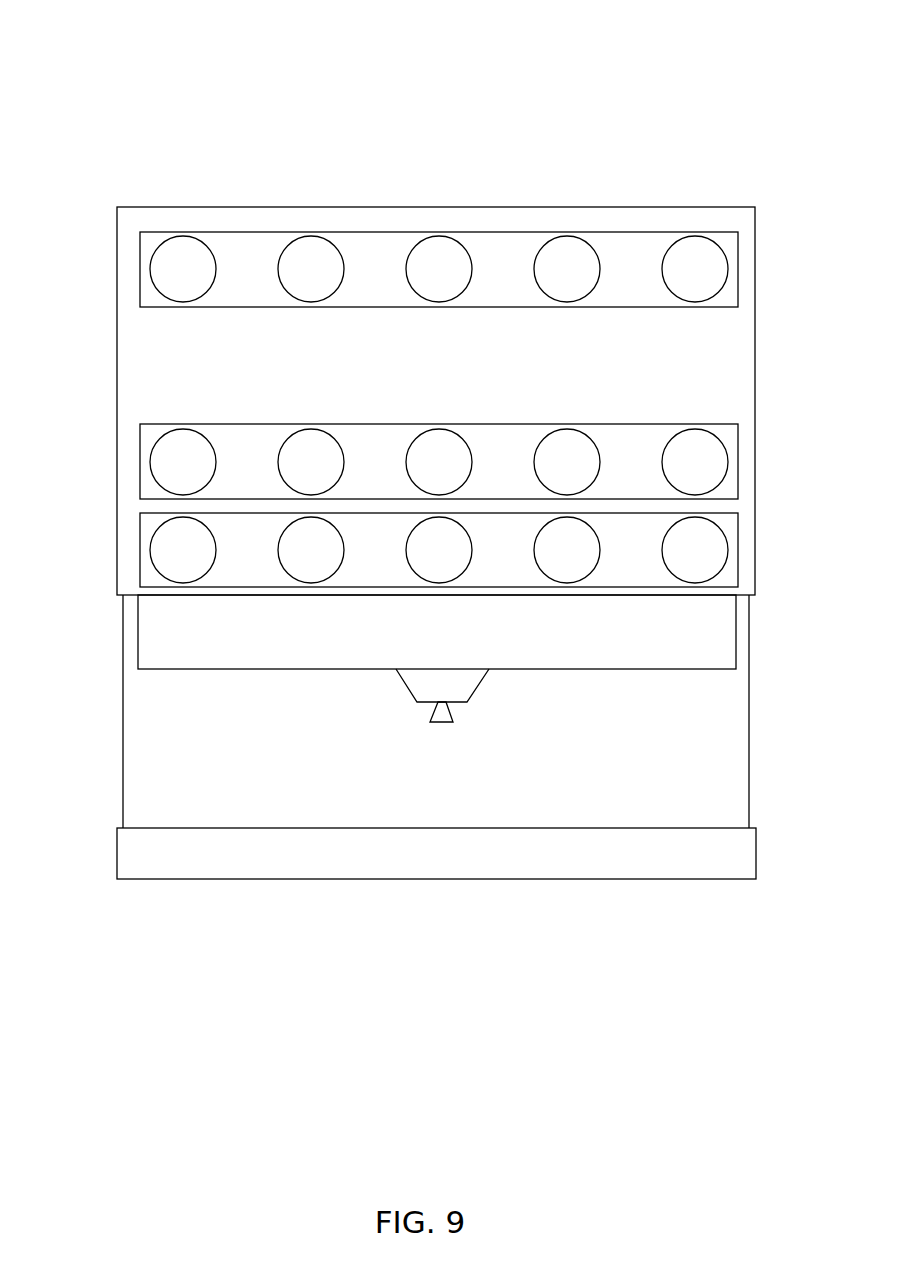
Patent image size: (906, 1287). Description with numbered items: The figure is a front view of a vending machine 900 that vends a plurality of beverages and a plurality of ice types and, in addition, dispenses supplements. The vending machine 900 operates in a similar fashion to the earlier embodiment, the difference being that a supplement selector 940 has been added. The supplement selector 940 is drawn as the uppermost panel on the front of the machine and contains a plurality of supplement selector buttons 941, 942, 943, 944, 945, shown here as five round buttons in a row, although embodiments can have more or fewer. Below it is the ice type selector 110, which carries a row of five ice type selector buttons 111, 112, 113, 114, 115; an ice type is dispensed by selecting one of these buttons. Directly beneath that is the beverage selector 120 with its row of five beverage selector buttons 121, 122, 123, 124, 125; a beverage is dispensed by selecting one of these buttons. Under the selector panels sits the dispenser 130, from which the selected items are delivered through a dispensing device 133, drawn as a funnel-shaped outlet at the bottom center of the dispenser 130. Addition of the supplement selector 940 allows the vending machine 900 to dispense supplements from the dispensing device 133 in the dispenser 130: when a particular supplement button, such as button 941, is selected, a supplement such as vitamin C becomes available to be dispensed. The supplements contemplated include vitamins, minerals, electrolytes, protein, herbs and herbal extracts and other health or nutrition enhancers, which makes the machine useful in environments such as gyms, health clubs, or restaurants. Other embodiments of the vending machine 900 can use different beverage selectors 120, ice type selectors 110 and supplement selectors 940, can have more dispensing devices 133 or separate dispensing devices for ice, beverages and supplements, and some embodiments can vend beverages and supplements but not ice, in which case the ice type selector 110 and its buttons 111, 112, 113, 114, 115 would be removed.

The vending machine 900 is at (237, 36).
The supplement selector 940 is at (141, 270).
The supplement selector button 941 is at (183, 236).
The supplement selector button 942 is at (311, 236).
The supplement selector button 943 is at (439, 236).
The supplement selector button 944 is at (567, 236).
The supplement selector button 945 is at (695, 236).
The ice type selector 110 is at (140, 463).
The ice type selector button 111 is at (183, 429).
The ice type selector button 112 is at (311, 429).
The ice type selector button 113 is at (439, 429).
The ice type selector button 114 is at (567, 429).
The ice type selector button 115 is at (695, 429).
The beverage selector 120 is at (140, 550).
The beverage selector button 121 is at (207, 573).
The beverage selector button 122 is at (336, 572).
The beverage selector button 123 is at (463, 573).
The beverage selector button 124 is at (592, 572).
The beverage selector button 125 is at (714, 574).
The dispenser 130 is at (138, 648).
The dispensing device 133 is at (412, 693).